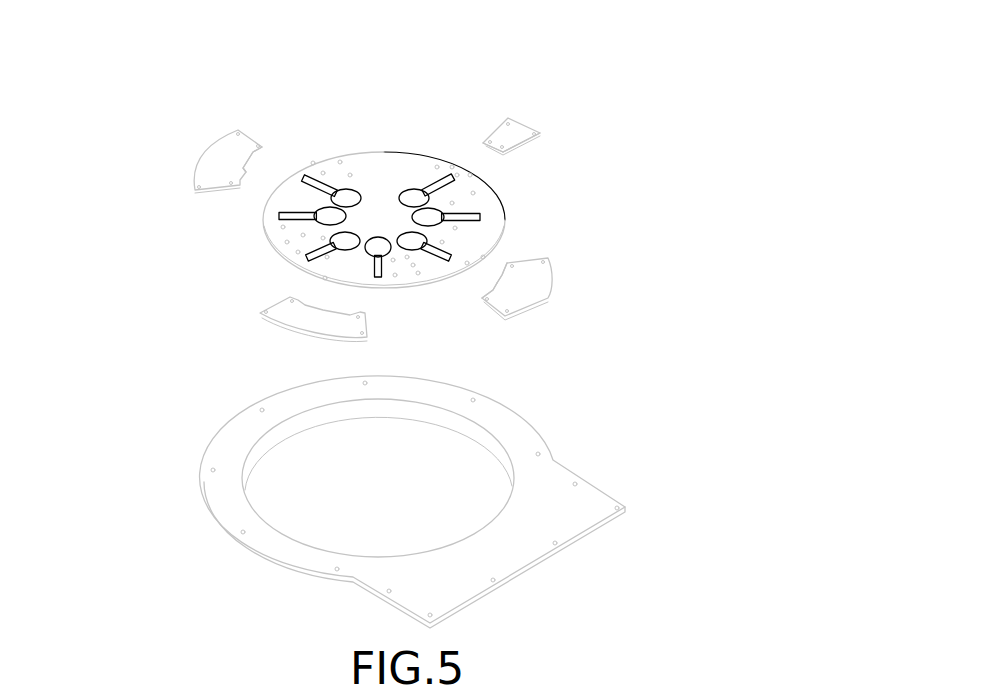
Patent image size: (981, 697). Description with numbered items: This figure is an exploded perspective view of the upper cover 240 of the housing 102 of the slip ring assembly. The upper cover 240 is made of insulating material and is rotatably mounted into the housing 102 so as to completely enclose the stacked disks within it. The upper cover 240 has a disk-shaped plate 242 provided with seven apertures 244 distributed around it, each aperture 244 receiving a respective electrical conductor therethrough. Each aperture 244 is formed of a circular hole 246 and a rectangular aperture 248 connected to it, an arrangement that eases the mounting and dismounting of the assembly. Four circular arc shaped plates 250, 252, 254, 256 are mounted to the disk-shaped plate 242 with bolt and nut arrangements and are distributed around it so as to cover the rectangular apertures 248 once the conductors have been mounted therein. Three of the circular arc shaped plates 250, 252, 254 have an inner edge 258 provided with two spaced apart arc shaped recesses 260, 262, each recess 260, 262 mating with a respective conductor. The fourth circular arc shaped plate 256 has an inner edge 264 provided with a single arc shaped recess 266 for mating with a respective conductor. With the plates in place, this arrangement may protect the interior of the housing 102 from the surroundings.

The housing 102 is at (195, 511).
The upper cover 240 is at (416, 66).
The disk-shaped plate 242 is at (490, 197).
The aperture 244 is at (406, 188).
The circular hole 246 is at (349, 197).
The rectangular aperture 248 is at (285, 203).
The circular arc shaped plate 250 is at (215, 160).
The circular arc shaped plate 252 is at (350, 331).
The circular arc shaped plate 254 is at (520, 292).
The fourth circular arc shaped plate 256 is at (518, 132).
The inner edge 258 is at (253, 168).
The arc shaped recess 260 is at (482, 297).
The arc shaped recess 262 is at (507, 263).
The inner edge 264 is at (502, 150).
The arc shaped recess 266 is at (502, 150).